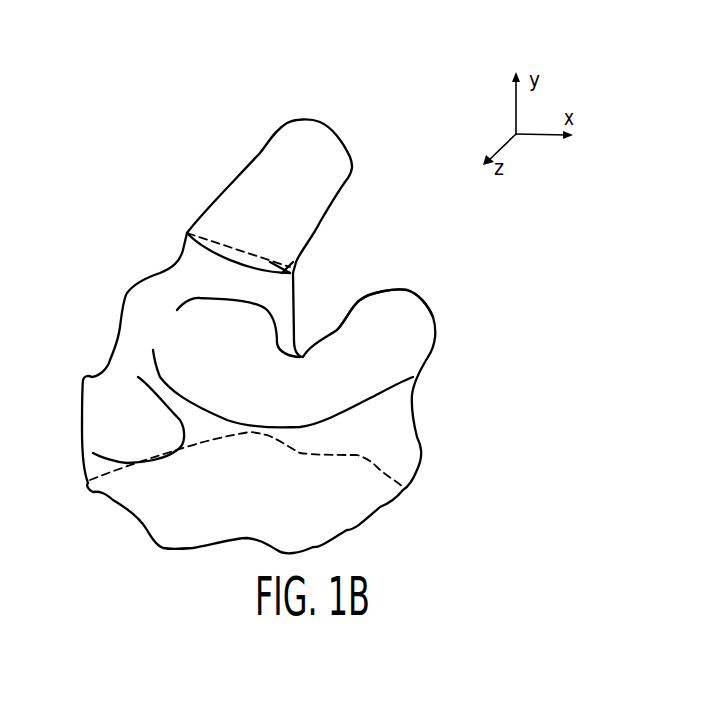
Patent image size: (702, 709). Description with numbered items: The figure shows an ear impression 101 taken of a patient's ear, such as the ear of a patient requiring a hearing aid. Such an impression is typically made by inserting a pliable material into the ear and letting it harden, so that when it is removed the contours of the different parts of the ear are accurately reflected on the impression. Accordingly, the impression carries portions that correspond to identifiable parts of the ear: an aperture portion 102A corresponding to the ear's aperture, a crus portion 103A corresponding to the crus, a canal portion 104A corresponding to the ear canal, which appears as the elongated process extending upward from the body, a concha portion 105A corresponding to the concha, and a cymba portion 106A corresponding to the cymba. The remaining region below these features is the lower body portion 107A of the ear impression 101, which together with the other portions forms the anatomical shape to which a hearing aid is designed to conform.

The ear impression 101 is at (287, 108).
The aperture portion 102A is at (290, 260).
The crus portion 103A is at (253, 411).
The canal portion 104A is at (132, 108).
The concha portion 105A is at (197, 325).
The cymba portion 106A is at (418, 318).
The lower body portion 107A is at (395, 438).